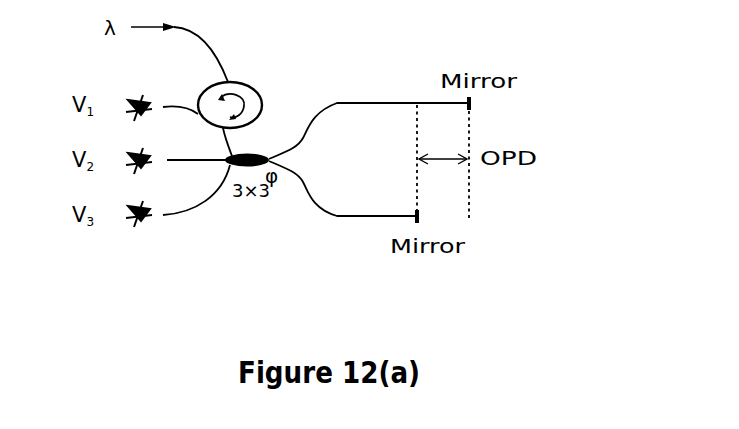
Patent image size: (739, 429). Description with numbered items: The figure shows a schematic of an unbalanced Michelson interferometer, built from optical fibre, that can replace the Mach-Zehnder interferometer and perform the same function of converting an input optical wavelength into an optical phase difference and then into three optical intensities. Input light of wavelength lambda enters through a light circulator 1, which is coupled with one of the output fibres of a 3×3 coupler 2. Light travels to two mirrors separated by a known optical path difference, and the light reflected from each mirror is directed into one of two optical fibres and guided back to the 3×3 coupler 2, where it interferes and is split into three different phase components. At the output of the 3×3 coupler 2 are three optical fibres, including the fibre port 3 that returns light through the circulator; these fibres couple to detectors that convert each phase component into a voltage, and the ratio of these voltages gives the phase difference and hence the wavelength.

The optical circulator 1 is at (230, 93).
The 3x3 fiber coupler 2 is at (247, 147).
The input fiber port 3 is at (180, 119).